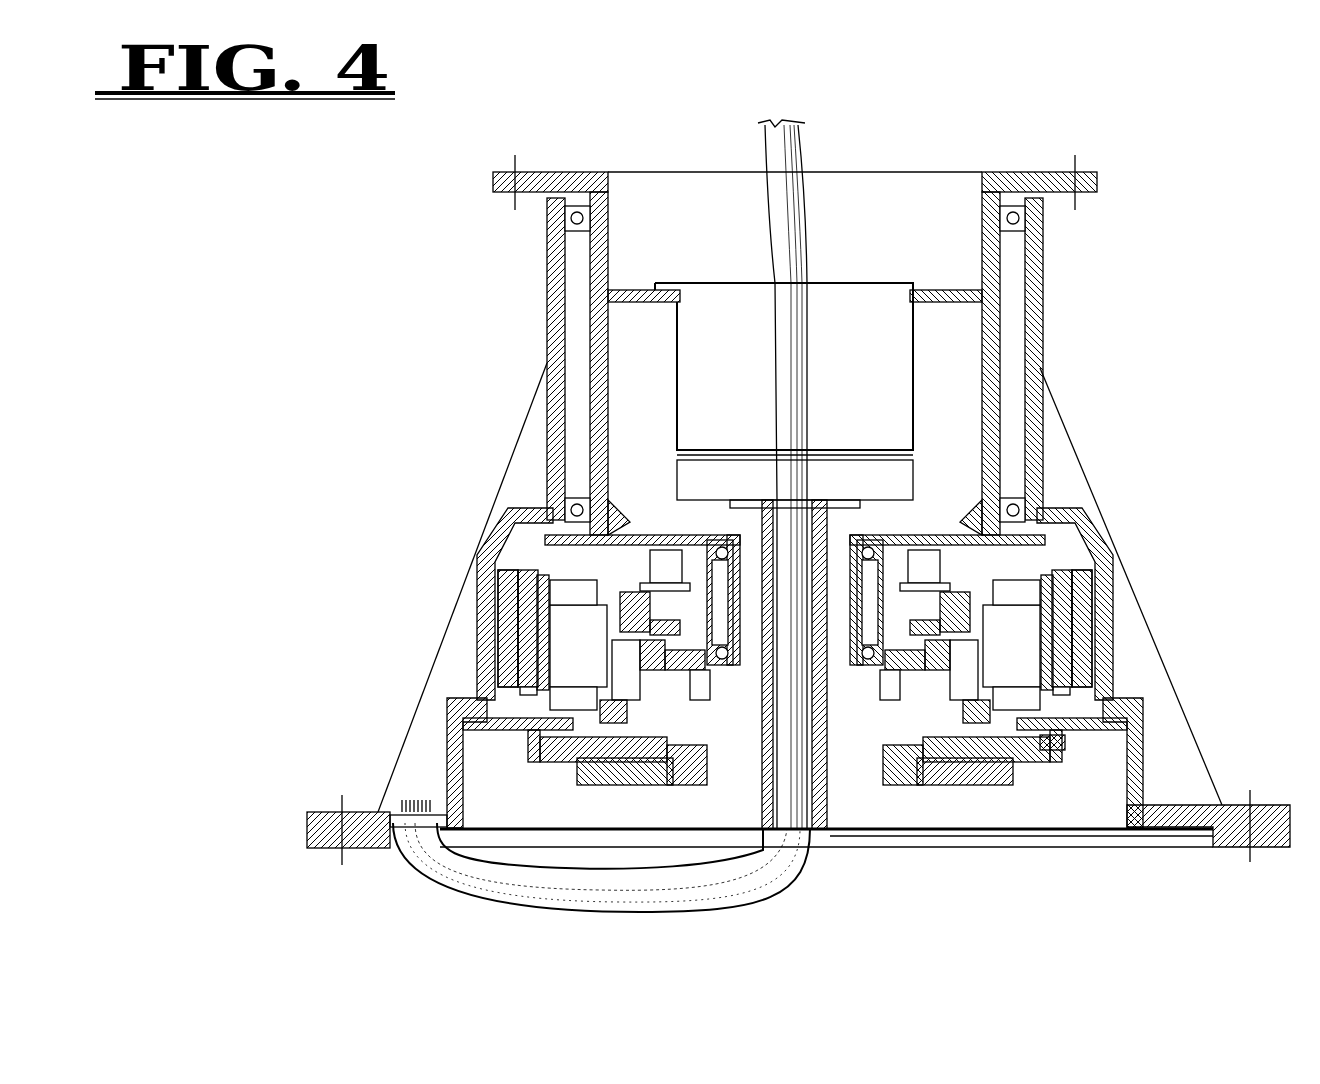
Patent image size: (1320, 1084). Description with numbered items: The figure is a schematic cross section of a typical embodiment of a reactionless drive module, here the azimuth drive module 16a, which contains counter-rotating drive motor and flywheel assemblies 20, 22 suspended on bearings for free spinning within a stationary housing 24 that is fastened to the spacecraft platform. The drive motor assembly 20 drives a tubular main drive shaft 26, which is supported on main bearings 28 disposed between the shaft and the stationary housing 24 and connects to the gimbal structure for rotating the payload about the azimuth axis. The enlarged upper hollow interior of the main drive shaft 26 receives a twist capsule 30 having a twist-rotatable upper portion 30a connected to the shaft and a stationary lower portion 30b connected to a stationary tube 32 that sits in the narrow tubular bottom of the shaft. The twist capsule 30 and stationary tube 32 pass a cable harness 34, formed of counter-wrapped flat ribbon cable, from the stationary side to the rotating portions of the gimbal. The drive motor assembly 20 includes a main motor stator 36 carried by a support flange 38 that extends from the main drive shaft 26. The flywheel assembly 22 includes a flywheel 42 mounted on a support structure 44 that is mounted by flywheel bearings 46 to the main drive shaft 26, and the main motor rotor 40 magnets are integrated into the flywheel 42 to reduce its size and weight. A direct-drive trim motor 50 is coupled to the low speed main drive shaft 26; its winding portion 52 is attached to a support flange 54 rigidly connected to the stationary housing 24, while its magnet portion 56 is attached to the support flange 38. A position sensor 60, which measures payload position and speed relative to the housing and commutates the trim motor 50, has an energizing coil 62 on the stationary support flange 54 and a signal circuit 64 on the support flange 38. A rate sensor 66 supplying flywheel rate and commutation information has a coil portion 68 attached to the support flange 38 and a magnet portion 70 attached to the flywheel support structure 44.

The azimuth drive module 16a is at (1148, 330).
The drive motor assembly 20 is at (545, 668).
The flywheel assembly 22 is at (510, 662).
The stationary housing 24 is at (1050, 508).
The main drive shaft 26 is at (1020, 165).
The main bearings 28 is at (570, 232).
The twist capsule 30 is at (795, 363).
The twist-rotatable upper portion 30a is at (905, 360).
The stationary lower portion 30b is at (910, 478).
The stationary tube 32 is at (840, 835).
The cable harness 34 is at (808, 885).
The main motor stator 36 is at (600, 673).
The support flange 38 is at (612, 600).
The main motor rotor 40 is at (512, 597).
The flywheel 42 is at (505, 642).
The support structure 44 is at (512, 540).
The flywheel bearings 46 is at (855, 553).
The trim motor 50 is at (555, 740).
The winding portion 52 is at (628, 662).
The support flange 54 is at (1068, 738).
The magnet portion 56 is at (692, 660).
The position sensor 60 is at (560, 762).
The energizing coil 62 is at (565, 750).
The signal circuit 64 is at (650, 787).
The rate sensor 66 is at (660, 552).
The coil portion 68 is at (672, 582).
The magnet portion 70 is at (698, 553).